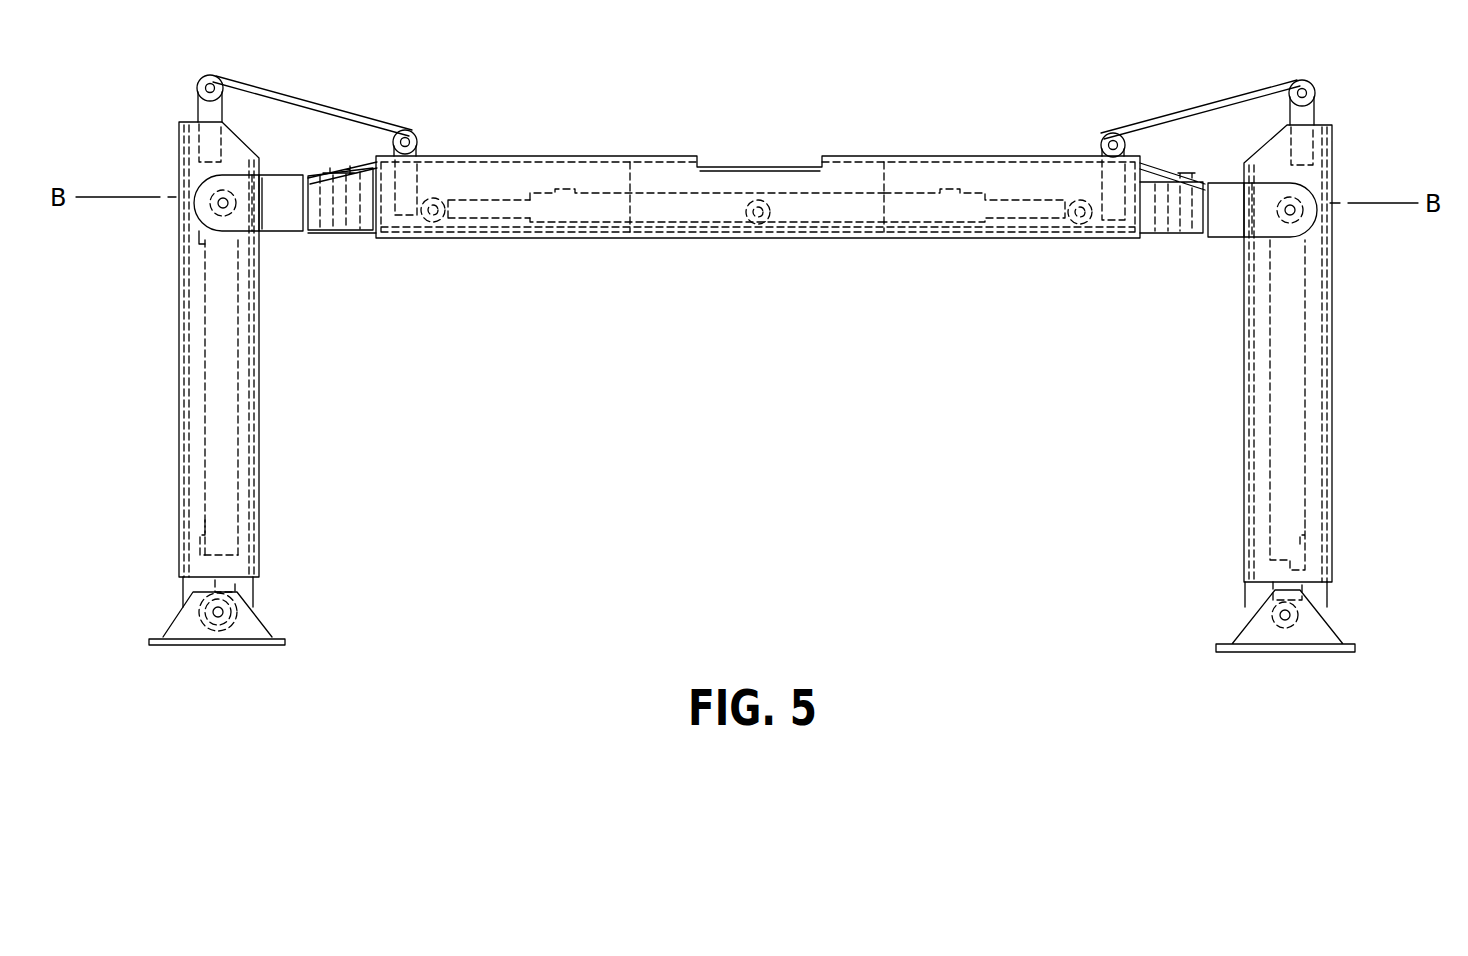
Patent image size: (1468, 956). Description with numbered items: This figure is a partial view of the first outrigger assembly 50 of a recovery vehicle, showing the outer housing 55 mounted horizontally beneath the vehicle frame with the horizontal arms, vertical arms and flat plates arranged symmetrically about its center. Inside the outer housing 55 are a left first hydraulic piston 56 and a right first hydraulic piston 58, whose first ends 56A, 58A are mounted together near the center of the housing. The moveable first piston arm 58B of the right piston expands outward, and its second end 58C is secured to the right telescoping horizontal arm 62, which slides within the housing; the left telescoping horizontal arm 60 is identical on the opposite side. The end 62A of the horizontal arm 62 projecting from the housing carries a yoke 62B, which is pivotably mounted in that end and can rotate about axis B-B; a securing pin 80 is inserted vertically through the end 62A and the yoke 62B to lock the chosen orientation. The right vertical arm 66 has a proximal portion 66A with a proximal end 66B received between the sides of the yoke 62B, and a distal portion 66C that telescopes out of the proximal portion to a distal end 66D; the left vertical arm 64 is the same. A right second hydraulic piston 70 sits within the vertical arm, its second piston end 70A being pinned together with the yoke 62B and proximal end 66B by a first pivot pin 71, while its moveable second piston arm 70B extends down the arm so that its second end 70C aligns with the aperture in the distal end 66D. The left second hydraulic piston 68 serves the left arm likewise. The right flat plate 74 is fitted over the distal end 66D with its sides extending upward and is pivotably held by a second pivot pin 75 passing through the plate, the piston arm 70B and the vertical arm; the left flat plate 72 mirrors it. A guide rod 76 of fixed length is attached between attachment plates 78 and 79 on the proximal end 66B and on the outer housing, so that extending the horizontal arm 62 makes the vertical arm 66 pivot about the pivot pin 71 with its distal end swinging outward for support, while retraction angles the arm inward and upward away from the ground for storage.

The first outrigger assembly 50 is at (1022, 175).
The outer housing 55 is at (876, 158).
The left first hydraulic piston 56 is at (940, 225).
The first end of left first hydraulic piston 56A is at (775, 218).
The right first hydraulic piston 58 is at (697, 206).
The first end of right first hydraulic piston 58A is at (752, 196).
The moveable first piston arm 58B is at (506, 185).
The second end of right first hydraulic piston 58C is at (452, 232).
The left telescoping horizontal arm 60 is at (1145, 237).
The right telescoping horizontal arm 62 is at (355, 235).
The end of horizontal arm 62A is at (340, 235).
The yoke 62B is at (290, 218).
The left vertical arm 64 is at (1322, 380).
The right vertical arm 66 is at (248, 380).
The proximal portion of vertical arm 66A is at (195, 265).
The proximal end of vertical arm 66B is at (195, 147).
The distal portion of vertical arm 66C is at (183, 585).
The distal end of vertical arm 66D is at (265, 618).
The left second hydraulic piston 68 is at (1300, 520).
The right second hydraulic piston 70 is at (230, 495).
The second piston end 70A is at (207, 225).
The moveable second piston arm 70B is at (258, 555).
The second end of moveable arm 70C is at (255, 595).
The first pivot pin 71 is at (215, 204).
The left flat plate 72 is at (1294, 642).
The right flat plate 74 is at (186, 630).
The second pivot pin 75 is at (182, 618).
The guide rod 76 is at (337, 121).
The attachment plate 78 is at (219, 78).
The attachment plate 79 is at (411, 131).
The securing pin 80 is at (330, 170).